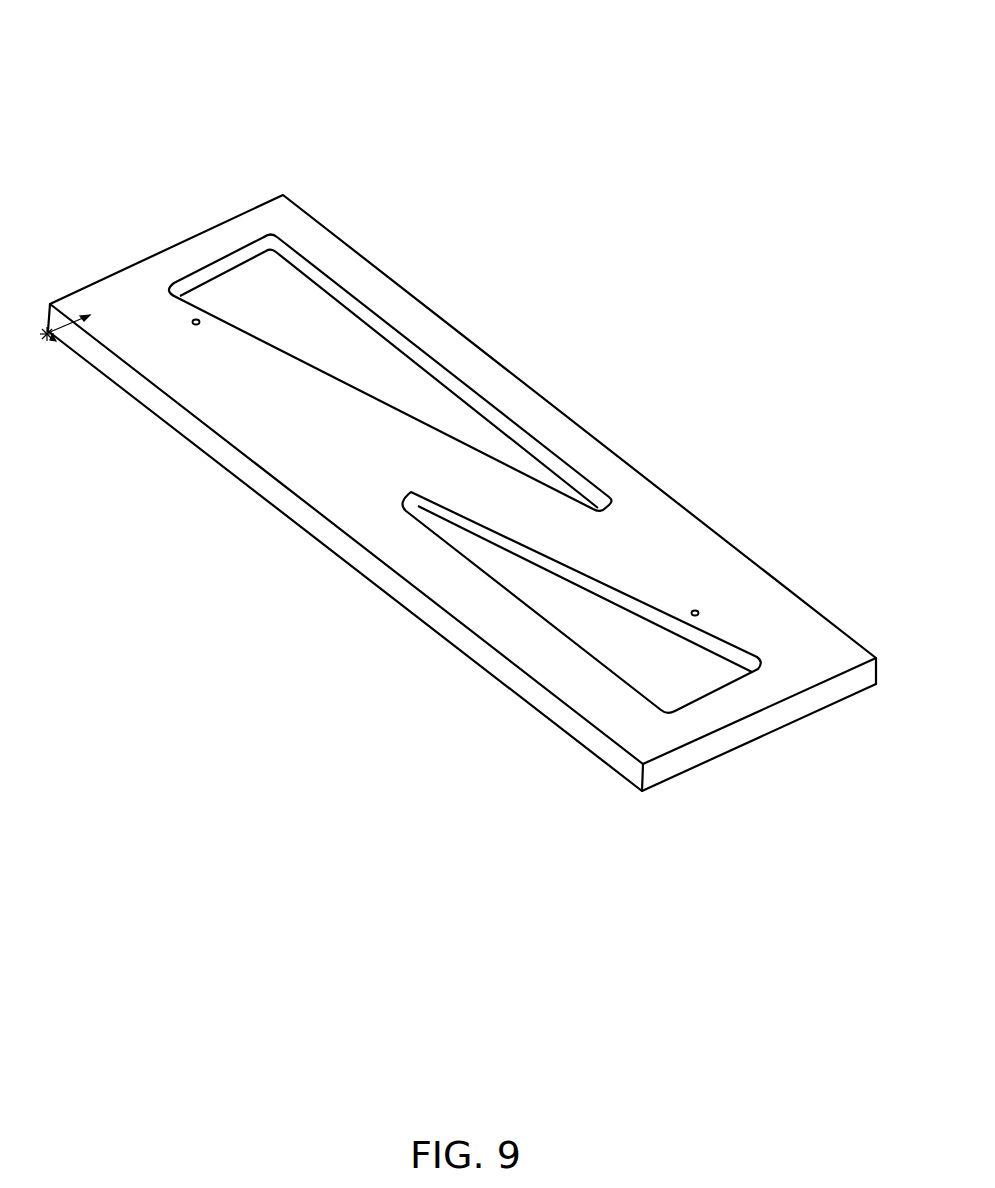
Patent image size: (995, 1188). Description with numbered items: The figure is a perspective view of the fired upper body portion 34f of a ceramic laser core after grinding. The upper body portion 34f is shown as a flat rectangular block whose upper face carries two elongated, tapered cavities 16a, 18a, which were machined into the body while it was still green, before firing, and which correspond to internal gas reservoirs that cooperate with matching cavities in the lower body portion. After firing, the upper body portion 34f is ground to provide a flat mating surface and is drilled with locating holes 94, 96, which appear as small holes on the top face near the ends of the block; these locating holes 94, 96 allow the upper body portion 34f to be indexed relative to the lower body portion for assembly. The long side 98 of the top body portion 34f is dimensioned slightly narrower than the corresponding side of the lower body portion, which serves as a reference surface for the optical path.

The fired upper body portion 34f is at (175, 110).
The cavity 18a is at (303, 317).
The cavity 16a is at (567, 615).
The locating hole 94 is at (192, 326).
The locating hole 96 is at (699, 609).
The side of top body portion 98 is at (315, 522).